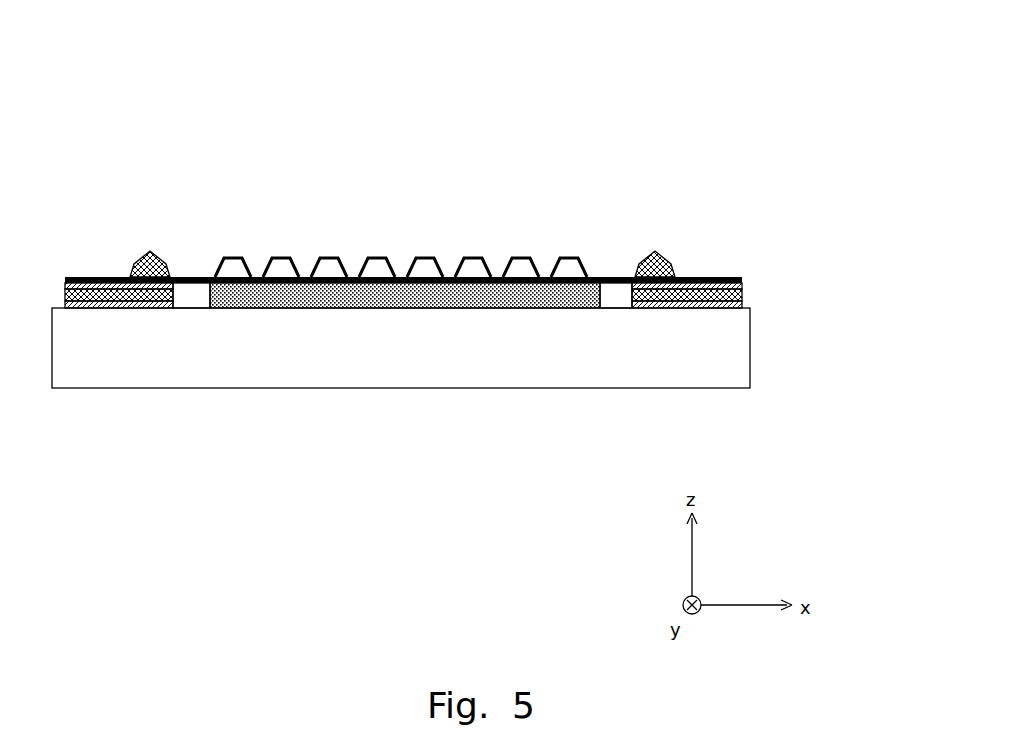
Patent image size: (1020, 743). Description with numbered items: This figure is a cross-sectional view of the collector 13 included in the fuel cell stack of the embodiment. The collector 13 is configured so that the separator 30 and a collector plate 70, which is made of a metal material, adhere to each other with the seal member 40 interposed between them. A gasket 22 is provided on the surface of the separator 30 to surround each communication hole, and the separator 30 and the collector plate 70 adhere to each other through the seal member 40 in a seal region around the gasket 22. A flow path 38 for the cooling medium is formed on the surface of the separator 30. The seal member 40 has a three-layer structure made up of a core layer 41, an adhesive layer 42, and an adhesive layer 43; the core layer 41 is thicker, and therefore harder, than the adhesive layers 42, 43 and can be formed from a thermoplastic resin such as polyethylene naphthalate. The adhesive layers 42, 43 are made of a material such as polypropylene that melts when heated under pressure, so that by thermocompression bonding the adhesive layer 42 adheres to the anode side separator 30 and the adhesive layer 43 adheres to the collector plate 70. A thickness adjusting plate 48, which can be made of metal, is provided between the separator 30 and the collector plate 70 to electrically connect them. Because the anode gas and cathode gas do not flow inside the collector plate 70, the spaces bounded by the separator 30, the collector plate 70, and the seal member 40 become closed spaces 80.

The collector 13 is at (742, 115).
The gasket 22 is at (140, 257).
The separator 30 is at (710, 278).
The flow path 38 is at (482, 258).
The seal member 40 is at (775, 296).
The core layer 41 is at (742, 292).
The adhesive layer 42 is at (742, 283).
The adhesive layer 43 is at (748, 325).
The thickness adjusting plate 48 is at (250, 308).
The collector plate 70 is at (748, 368).
The closed spaces 80 is at (189, 292).